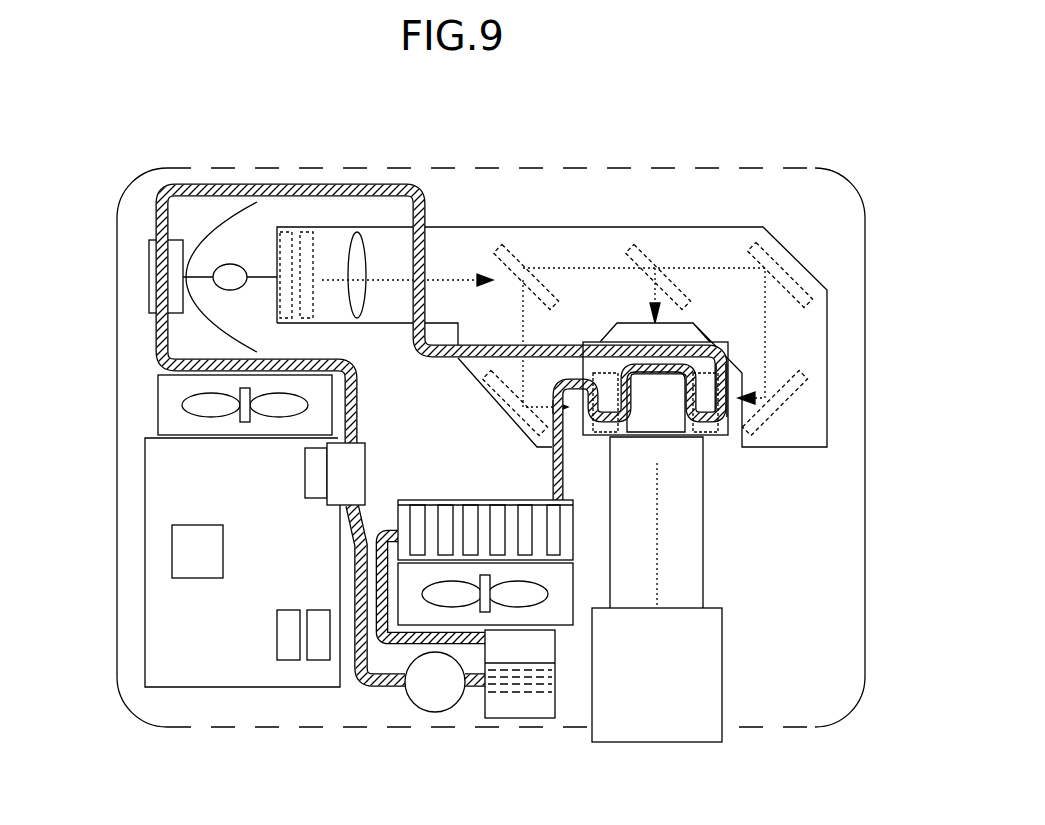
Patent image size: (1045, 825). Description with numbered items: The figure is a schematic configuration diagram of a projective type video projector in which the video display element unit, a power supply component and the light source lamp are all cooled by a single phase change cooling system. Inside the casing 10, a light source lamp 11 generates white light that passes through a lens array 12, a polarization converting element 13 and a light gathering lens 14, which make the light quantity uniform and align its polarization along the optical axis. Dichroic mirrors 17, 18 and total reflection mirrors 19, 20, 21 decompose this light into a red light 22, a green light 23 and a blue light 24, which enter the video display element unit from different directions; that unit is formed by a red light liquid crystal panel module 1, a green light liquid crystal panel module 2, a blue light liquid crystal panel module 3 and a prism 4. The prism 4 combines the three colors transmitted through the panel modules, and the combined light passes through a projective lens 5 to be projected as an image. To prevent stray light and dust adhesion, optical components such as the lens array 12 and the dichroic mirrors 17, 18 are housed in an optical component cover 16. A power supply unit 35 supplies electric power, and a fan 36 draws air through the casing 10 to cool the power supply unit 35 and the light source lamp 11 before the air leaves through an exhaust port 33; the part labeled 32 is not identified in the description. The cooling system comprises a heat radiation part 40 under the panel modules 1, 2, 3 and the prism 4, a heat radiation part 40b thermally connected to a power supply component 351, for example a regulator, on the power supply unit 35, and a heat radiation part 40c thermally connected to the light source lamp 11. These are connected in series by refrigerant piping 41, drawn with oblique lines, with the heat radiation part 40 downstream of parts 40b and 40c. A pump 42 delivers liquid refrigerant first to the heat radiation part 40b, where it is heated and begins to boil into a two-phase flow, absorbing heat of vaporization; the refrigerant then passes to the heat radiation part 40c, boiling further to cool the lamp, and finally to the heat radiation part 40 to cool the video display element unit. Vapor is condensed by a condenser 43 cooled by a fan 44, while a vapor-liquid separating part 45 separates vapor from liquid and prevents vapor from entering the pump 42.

The red light liquid crystal panel module 1 is at (605, 438).
The green light liquid crystal panel module 2 is at (693, 342).
The blue light liquid crystal panel module 3 is at (707, 438).
The prism 4 is at (657, 440).
The projective lens 5 is at (722, 673).
The casing 10 is at (115, 350).
The light source lamp 11 is at (226, 270).
The lens array 12 is at (285, 232).
The polarization converting element 13 is at (307, 232).
The light gathering lens 14 is at (357, 232).
The optical component cover 16 is at (707, 227).
The dichroic mirror 17 is at (503, 248).
The dichroic mirror 18 is at (647, 243).
The total reflection mirror 19 is at (763, 242).
The total reflection mirror 20 is at (805, 385).
The total reflection mirror 21 is at (507, 410).
The red light 22 is at (520, 370).
The green light 23 is at (650, 295).
The blue light 24 is at (768, 342).
The lower case 32 is at (240, 728).
The exhaust port 33 is at (197, 166).
The power supply unit 35 is at (145, 525).
The power supply component 351 is at (305, 470).
The fan 36 is at (158, 403).
The heat radiation part 40 is at (600, 342).
The heat radiation part 40b is at (367, 473).
The heat radiation part 40c is at (149, 272).
The refrigerant piping 41 is at (373, 688).
The pump 42 is at (435, 712).
The condenser 43 is at (483, 498).
The fan 44 is at (573, 595).
The vapor-liquid separating part 45 is at (517, 718).